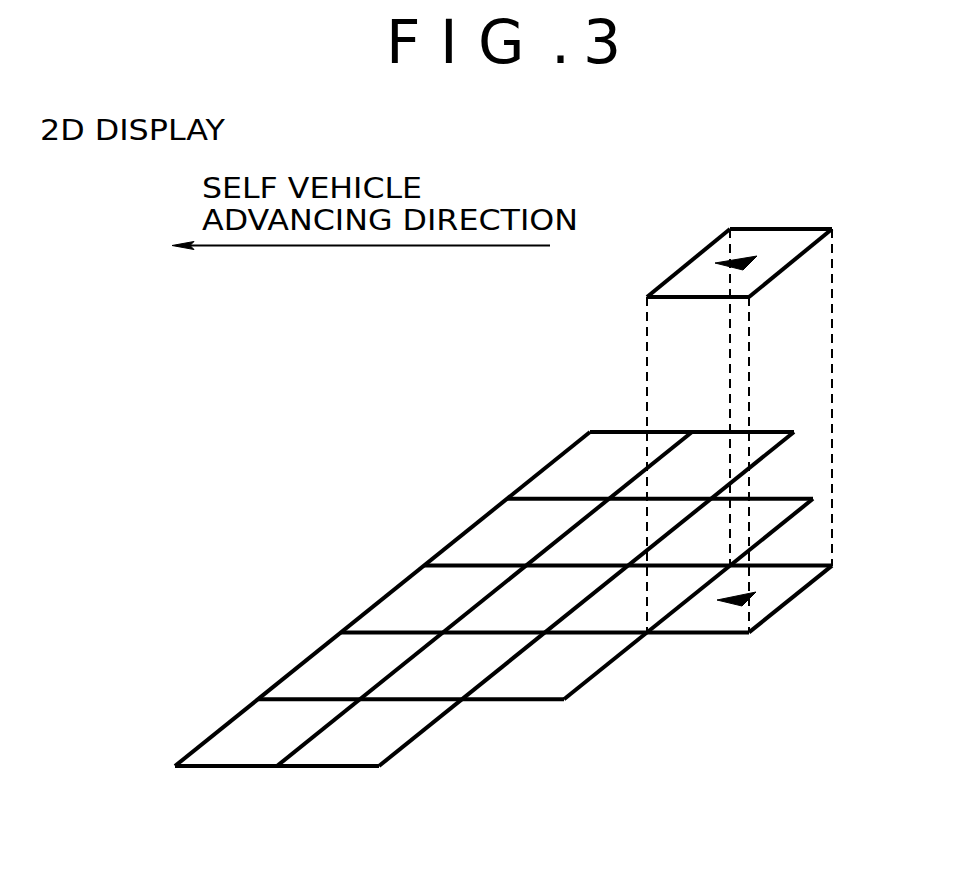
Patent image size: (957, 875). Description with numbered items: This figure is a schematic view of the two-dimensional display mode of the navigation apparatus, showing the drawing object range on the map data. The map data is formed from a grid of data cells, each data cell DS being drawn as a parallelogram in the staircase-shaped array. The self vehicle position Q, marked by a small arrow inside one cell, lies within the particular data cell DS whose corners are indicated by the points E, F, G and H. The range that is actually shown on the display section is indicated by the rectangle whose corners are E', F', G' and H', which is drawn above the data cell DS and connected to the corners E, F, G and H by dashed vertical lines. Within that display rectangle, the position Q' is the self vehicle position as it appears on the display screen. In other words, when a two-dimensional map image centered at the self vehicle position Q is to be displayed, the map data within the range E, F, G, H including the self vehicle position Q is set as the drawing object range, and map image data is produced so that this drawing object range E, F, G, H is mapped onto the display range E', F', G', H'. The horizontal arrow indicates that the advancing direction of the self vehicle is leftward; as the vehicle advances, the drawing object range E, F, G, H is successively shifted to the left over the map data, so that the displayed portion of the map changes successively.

The data cell DS is at (570, 460).
The corner of drawing object range E is at (624, 464).
The corner of drawing object range F is at (707, 397).
The corner of drawing object range G is at (775, 487).
The corner of drawing object range H is at (858, 397).
The self vehicle position Q is at (727, 653).
The corner of display range E' is at (661, 263).
The corner of display range F' is at (754, 208).
The corner of display range G' is at (728, 318).
The corner of display range H' is at (820, 242).
The self vehicle position on display screen Q' is at (756, 213).